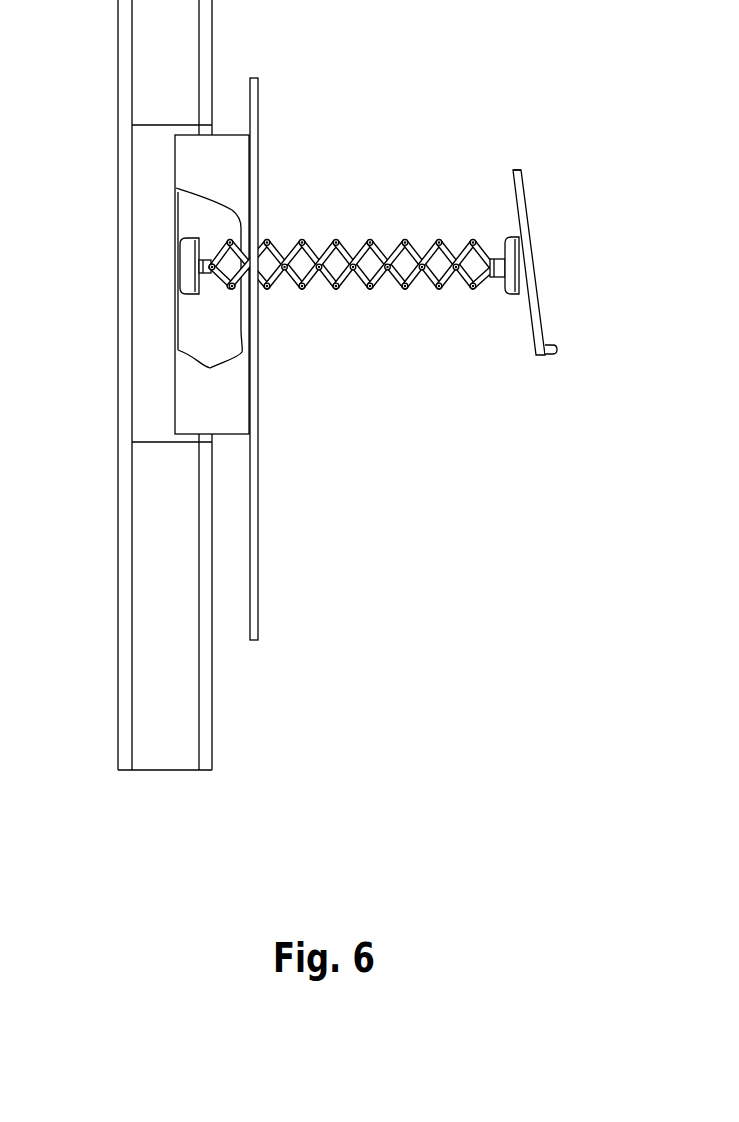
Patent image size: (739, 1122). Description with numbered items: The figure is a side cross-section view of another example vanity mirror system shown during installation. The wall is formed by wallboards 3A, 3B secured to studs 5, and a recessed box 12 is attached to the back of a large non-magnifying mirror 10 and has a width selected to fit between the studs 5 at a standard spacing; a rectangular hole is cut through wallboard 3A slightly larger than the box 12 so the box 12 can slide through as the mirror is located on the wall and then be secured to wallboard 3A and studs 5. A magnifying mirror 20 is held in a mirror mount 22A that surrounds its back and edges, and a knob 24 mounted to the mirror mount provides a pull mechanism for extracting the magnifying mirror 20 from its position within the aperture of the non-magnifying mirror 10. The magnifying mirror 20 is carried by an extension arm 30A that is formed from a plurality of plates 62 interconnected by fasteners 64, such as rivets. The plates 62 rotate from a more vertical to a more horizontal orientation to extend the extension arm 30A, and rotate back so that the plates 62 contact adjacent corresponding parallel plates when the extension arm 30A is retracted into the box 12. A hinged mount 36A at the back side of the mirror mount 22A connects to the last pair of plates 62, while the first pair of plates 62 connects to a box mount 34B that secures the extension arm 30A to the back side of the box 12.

The wallboard 3A is at (212, 712).
The wallboard 3B is at (118, 703).
The stud 5 is at (155, 770).
The non-magnifying mirror 10 is at (258, 577).
The recessed box 12 is at (187, 433).
The magnifying mirror 20 is at (534, 243).
The mirror mount 22A is at (517, 175).
The knob 24 is at (557, 352).
The extension arm 30A is at (352, 198).
The box mount 34B is at (183, 277).
The hinged mount 36A is at (513, 293).
The plate 62 is at (352, 240).
The fastener 64 is at (409, 238).